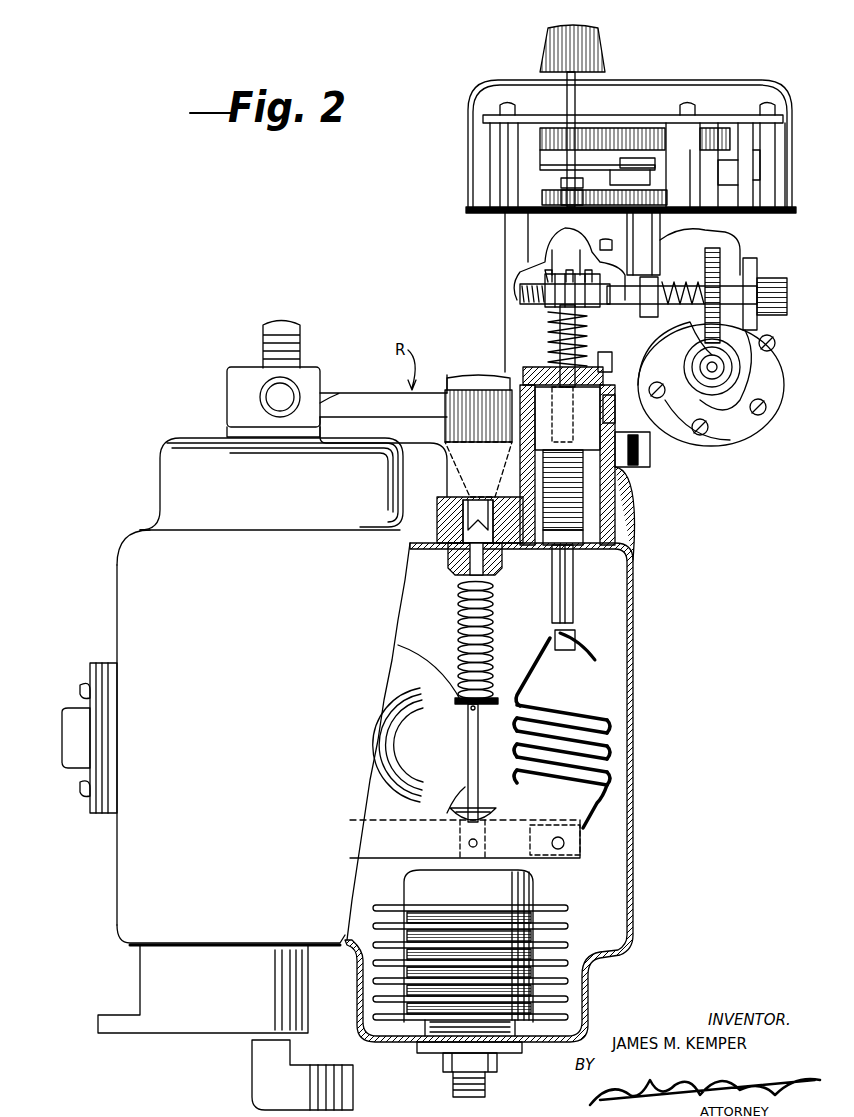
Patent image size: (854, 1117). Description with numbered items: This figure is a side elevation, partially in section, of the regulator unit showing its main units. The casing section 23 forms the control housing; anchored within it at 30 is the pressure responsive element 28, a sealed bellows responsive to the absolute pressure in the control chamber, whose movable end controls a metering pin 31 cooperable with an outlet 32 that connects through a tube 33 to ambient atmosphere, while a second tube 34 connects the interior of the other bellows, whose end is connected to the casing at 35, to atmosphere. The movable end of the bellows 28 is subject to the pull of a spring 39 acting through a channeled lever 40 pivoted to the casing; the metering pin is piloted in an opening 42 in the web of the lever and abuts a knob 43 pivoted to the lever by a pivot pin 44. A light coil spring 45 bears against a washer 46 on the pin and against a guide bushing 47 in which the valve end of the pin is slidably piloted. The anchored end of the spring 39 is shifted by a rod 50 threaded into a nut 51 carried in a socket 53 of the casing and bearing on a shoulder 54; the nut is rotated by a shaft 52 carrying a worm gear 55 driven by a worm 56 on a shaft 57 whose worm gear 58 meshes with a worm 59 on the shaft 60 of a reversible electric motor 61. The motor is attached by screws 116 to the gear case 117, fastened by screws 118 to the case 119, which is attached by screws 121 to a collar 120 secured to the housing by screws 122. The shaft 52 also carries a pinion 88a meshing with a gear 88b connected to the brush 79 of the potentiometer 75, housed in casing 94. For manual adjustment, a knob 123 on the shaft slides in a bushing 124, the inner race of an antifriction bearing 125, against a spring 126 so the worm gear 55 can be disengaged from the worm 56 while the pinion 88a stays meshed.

The casing section 23 is at (637, 749).
The pressure responsive element 28 is at (570, 912).
The anchorage of bellows 30 is at (497, 1063).
The metering pin 31 is at (478, 732).
The outlet 32 is at (465, 515).
The tube 33 is at (370, 393).
The tube 34 is at (252, 1088).
The connection of pressure responsive element 35 is at (345, 503).
The spring 39 is at (585, 722).
The lever 40 is at (408, 846).
The opening 42 is at (485, 812).
The knob 43 is at (490, 870).
The pivot pin 44 is at (468, 843).
The coil spring 45 is at (460, 632).
The washer 46 is at (457, 700).
The guide bushing 47 is at (500, 568).
The rod 50 is at (573, 598).
The nut 51 is at (545, 428).
The shaft 52 is at (577, 104).
The socket 53 is at (612, 512).
The shoulder 54 is at (588, 548).
The worm gear 55 is at (520, 292).
The worm 56 is at (545, 285).
The shaft 57 is at (684, 292).
The worm gear 58 is at (722, 262).
The worm 59 is at (705, 355).
The shaft 60 is at (715, 372).
The reversible electric motor 61 is at (718, 440).
The potentiometer 75 is at (643, 105).
The brush 79 is at (540, 155).
The pinion 88a is at (561, 200).
The gear 88b is at (561, 185).
The casing 94 is at (716, 88).
The screws 116 is at (698, 436).
The gear case 117 is at (760, 388).
The screws 118 is at (608, 240).
The case 119 is at (540, 252).
The collar 120 is at (612, 408).
The screws 121 is at (525, 372).
The screws 122 is at (650, 445).
The knob 123 is at (542, 48).
The bushing 124 is at (545, 350).
The antifriction bearing 125 is at (540, 400).
The spring 126 is at (548, 325).